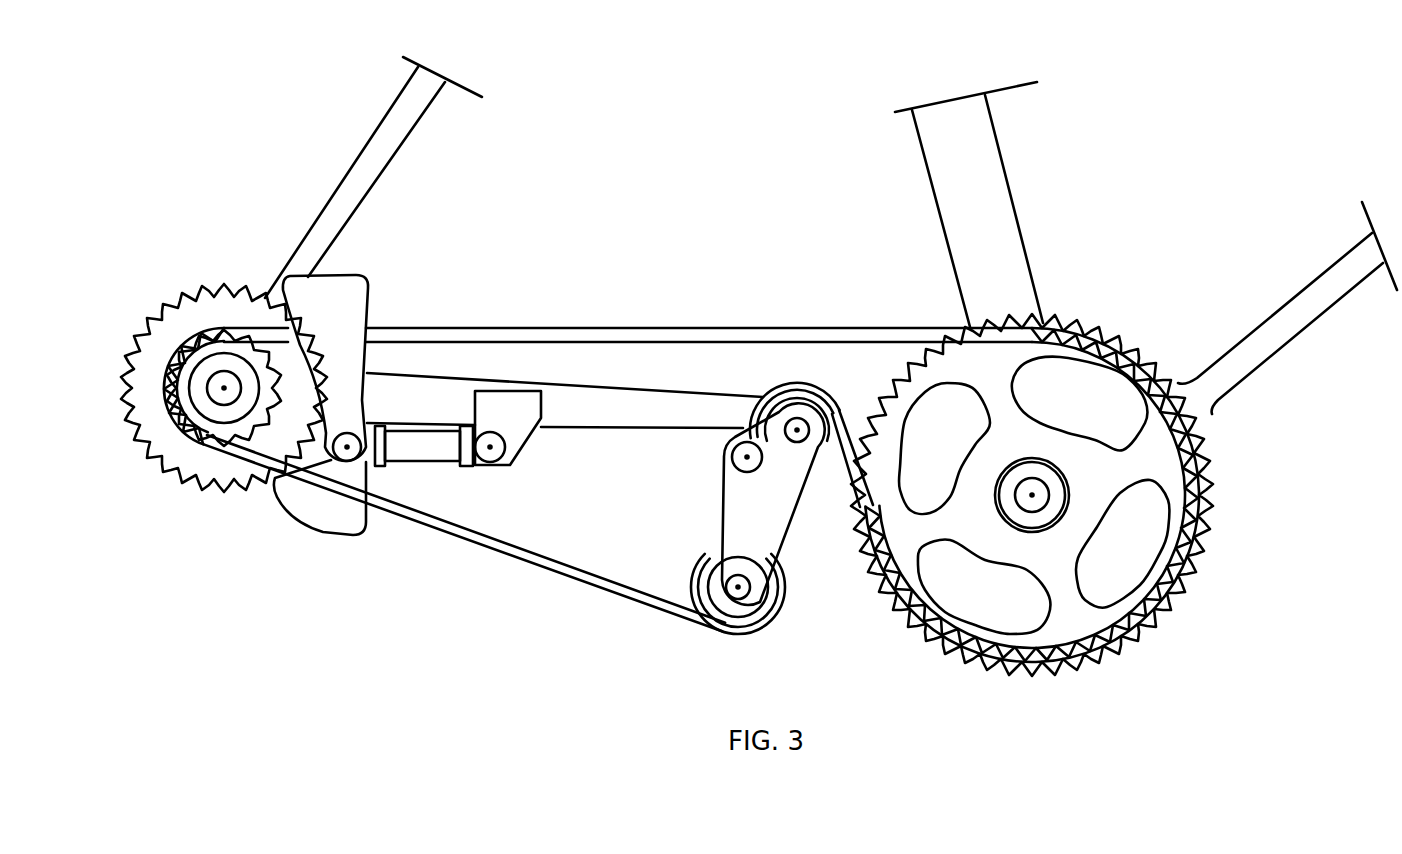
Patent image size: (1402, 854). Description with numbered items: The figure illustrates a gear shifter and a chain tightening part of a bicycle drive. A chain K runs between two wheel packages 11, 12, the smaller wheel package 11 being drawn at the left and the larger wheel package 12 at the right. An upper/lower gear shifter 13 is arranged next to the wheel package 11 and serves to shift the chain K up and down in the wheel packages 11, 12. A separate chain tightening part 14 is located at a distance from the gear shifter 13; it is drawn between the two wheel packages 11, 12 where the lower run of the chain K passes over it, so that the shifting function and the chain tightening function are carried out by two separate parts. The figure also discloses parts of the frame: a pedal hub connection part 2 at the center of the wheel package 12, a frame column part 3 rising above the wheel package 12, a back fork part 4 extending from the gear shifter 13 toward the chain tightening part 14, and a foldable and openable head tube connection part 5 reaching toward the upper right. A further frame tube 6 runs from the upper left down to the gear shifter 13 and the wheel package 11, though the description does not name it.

The pedal hub connection part 2 is at (1005, 485).
The frame column part 3 is at (958, 207).
The back fork part 4 is at (587, 408).
The foldable and openable head tube connection part 5 is at (1298, 315).
The seat stay 6 is at (337, 207).
The wheel package 11 is at (235, 487).
The wheel package 12 is at (1165, 610).
The upper/lower gear shifter 13 is at (327, 518).
The chain tightening part 14 is at (745, 500).
The chain K is at (480, 550).